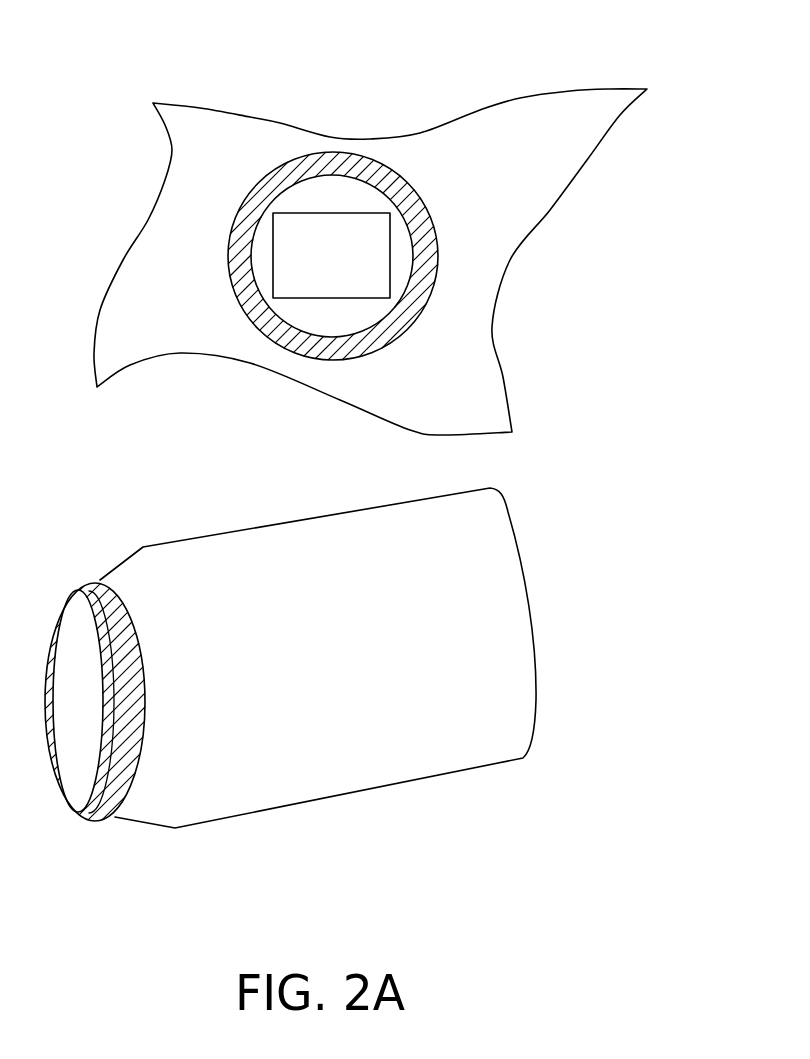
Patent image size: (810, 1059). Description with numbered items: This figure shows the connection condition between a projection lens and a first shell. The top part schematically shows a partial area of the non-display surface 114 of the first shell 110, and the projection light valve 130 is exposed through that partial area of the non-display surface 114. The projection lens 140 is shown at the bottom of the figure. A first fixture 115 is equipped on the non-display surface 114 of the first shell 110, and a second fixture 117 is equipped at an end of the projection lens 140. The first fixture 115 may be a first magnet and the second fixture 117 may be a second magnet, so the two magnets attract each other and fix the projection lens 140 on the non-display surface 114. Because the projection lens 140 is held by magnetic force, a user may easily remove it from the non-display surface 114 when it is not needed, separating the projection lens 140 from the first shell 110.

The first shell 110 is at (198, 107).
The non-display surface 114 is at (193, 167).
The first fixture 115 is at (242, 242).
The projection light valve 130 is at (287, 282).
The second fixture 117 is at (100, 592).
The projection lens 140 is at (279, 671).